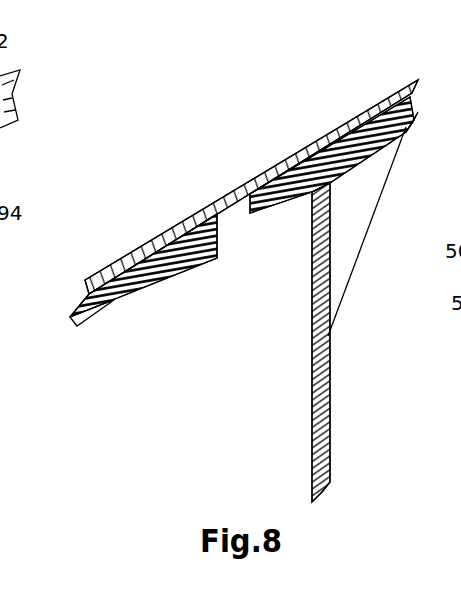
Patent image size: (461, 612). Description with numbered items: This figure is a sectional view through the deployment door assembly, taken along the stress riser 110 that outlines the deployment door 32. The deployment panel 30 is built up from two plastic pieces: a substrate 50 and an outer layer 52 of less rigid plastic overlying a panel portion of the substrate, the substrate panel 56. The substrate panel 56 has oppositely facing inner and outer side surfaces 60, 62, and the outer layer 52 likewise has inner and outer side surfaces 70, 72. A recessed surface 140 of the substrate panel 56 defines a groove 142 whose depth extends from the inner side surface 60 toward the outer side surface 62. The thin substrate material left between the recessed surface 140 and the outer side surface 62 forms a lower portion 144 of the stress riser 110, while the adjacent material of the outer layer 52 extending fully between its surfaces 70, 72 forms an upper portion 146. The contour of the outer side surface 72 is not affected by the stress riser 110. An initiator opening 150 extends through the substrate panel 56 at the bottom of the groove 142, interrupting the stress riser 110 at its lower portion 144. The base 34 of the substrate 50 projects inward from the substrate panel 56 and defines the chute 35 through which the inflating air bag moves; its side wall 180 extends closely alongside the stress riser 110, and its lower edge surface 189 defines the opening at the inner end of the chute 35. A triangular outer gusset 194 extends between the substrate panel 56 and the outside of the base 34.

The deployment panel 30 is at (343, 118).
The deployment door 32 is at (137, 250).
The base 34 is at (333, 390).
The chute 35 is at (263, 450).
The substrate 50 is at (70, 328).
The outer layer 52 is at (72, 285).
The substrate panel 56 is at (108, 320).
The inner side surface of the substrate panel 60 is at (144, 298).
The outer side surface of the substrate panel 62 is at (101, 280).
The inner side surface of the outer layer 70 is at (0, 130).
The outer side surface of the outer layer 72 is at (378, 102).
The stress riser 110 is at (214, 192).
The recessed surface 140 is at (237, 215).
The groove 142 is at (242, 243).
The lower portion of the stress riser 144 is at (216, 225).
The upper portion of the stress riser 146 is at (250, 190).
The initiator opening 150 is at (247, 218).
The side wall 180 is at (328, 352).
The lower edge surface 189 is at (321, 491).
The outer gusset 194 is at (345, 206).